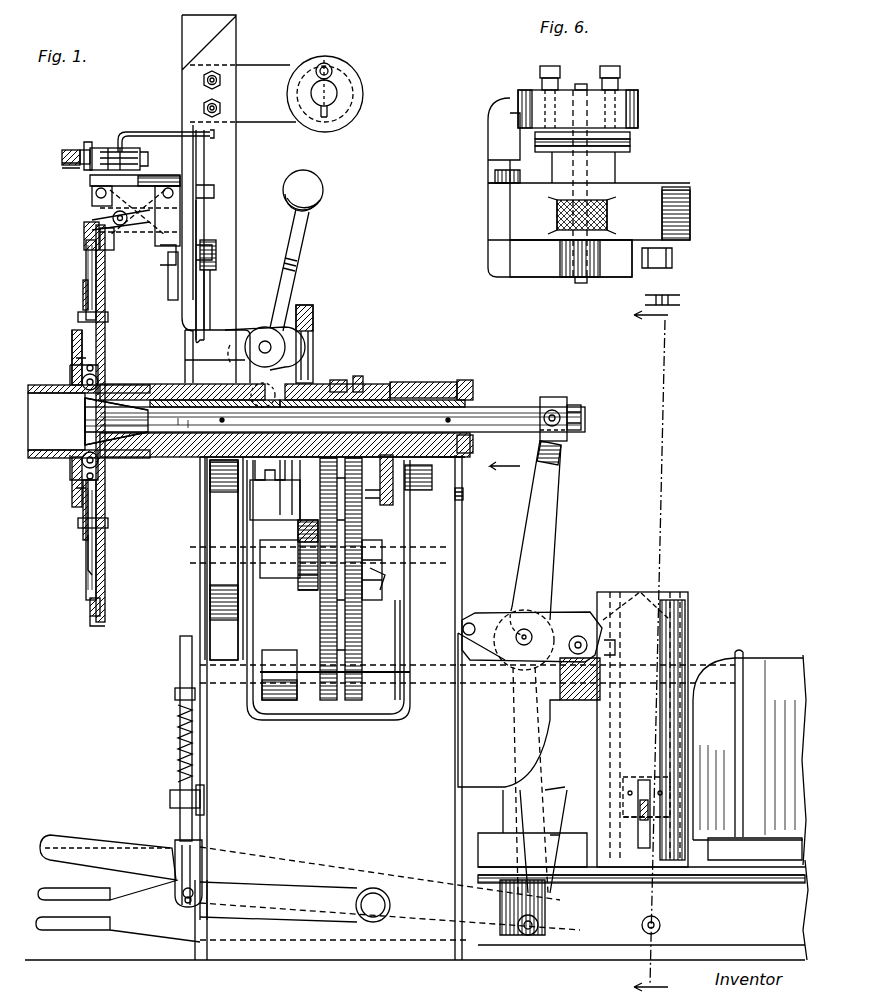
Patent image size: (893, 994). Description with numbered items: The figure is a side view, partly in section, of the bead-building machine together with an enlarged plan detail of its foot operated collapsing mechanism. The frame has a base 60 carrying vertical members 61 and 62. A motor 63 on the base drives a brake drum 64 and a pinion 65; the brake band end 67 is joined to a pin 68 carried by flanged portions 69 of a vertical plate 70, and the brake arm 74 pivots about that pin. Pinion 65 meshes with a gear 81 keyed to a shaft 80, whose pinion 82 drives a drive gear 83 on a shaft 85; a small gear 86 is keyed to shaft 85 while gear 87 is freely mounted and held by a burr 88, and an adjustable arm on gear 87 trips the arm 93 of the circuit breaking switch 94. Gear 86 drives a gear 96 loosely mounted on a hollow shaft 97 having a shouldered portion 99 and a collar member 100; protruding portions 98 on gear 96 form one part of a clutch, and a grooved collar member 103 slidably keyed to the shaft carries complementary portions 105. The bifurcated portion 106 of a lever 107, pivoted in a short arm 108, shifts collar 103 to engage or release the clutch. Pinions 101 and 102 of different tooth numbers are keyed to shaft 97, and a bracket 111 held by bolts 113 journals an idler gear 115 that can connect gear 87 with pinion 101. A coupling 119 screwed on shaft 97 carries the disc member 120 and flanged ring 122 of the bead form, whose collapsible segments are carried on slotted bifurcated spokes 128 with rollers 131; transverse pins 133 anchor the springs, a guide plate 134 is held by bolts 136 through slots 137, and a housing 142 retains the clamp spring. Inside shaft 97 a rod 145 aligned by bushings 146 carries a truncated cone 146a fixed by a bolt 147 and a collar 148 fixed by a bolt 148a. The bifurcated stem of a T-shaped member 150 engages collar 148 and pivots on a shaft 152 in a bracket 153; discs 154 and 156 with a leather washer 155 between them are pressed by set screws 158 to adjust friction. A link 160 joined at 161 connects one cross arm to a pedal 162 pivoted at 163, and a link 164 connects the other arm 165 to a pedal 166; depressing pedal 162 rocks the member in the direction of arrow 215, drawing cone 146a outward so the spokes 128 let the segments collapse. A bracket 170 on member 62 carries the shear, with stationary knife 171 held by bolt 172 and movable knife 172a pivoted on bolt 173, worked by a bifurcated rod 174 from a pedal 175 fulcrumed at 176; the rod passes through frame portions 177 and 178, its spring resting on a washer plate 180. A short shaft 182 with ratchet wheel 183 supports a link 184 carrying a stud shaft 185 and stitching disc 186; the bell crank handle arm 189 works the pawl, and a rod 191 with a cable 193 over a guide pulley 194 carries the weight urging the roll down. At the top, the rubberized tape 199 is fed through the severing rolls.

In FIG. 1, the base 60 is at (416, 910).
In FIG. 1, the vertically disposed frame member 61 is at (428, 382).
In FIG. 1, the vertically disposed frame member 62 is at (222, 170).
In FIG. 1, the motor 63 is at (756, 660).
In FIG. 1, the brake drum 64 is at (690, 710).
In FIG. 1, the pinion 65 is at (622, 778).
In FIG. 1, the end of brake band 67 is at (622, 793).
In FIG. 1, the pin 68 is at (622, 808).
In FIG. 1, the flanged portions 69 is at (636, 596).
In FIG. 1, the vertically disposed plate 70 is at (688, 637).
In FIG. 1, the brake arm 74 is at (645, 780).
In FIG. 1, the shaft 80 is at (378, 683).
In FIG. 1, the gear 81 is at (615, 647).
In FIG. 1, the pinion 82 is at (325, 662).
In FIG. 1, the drive gear 83 is at (330, 628).
In FIG. 1, the shaft 85 is at (283, 545).
In FIG. 1, the small gear 86 is at (308, 595).
In FIG. 1, the gear 87 is at (362, 615).
In FIG. 1, the burr 88 is at (379, 570).
In FIG. 1, the switch arm 93 is at (385, 568).
In FIG. 1, the circuit breaking switch 94 is at (390, 625).
In FIG. 1, the gear 96 is at (313, 318).
In FIG. 1, the hollow shaft 97 is at (383, 398).
In FIG. 1, the protruding portions 98 is at (288, 490).
In FIG. 1, the shouldered portion 99 is at (178, 393).
In FIG. 1, the collar member 100 is at (466, 400).
In FIG. 1, the small pinion 101 is at (340, 380).
In FIG. 1, the small pinion 102 is at (360, 374).
In FIG. 1, the grooved collar member 103 is at (268, 472).
In FIG. 1, the protruding portions 105 is at (275, 500).
In FIG. 1, the bifurcated portion 106 is at (223, 558).
In FIG. 1, the lever 107 is at (295, 235).
In FIG. 1, the short arm 108 is at (262, 338).
In FIG. 1, the bracket 111 is at (427, 477).
In FIG. 1, the bolts 113 is at (463, 490).
In FIG. 1, the idler gear wheel 115 is at (395, 508).
In FIG. 1, the coupling 119 is at (105, 345).
In FIG. 1, the disc member 120 is at (105, 297).
In FIG. 1, the ring 122 is at (90, 618).
In FIG. 1, the slotted bifurcated spokes 128 is at (90, 270).
In FIG. 1, the roller 131 is at (80, 380).
In FIG. 1, the transverse pins 133 is at (75, 360).
In FIG. 1, the guide plate 134 is at (85, 295).
In FIG. 1, the bolts 136 is at (78, 316).
In FIG. 1, the slots 137 is at (88, 550).
In FIG. 1, the housing 142 is at (114, 250).
In FIG. 1, the rod 145 is at (522, 420).
In FIG. 1, the bushings 146 is at (492, 433).
In FIG. 1, the truncated cone 146a is at (128, 402).
In FIG. 1, the bolt 147 is at (80, 425).
In FIG. 1, the collar 148 is at (552, 402).
In FIG. 1, the bolt 148a is at (582, 418).
In FIG. 1, the T-shaped member 150 is at (558, 462).
In FIG. 6, the T-shaped member 150 is at (610, 200).
In FIG. 1, the shaft 152 is at (524, 648).
In FIG. 6, the shaft 152 is at (580, 84).
In FIG. 1, the bracket 153 is at (540, 630).
In FIG. 6, the bracket 153 is at (522, 100).
In FIG. 6, the disc 154 is at (632, 150).
In FIG. 6, the leather washer 155 is at (632, 142).
In FIG. 6, the disc 156 is at (632, 132).
In FIG. 6, the set screws 158 is at (550, 66).
In FIG. 1, the link 160 is at (505, 815).
In FIG. 6, the link 160 is at (490, 187).
In FIG. 1, the pivot joint 161 is at (470, 623).
In FIG. 1, the pedal 162 is at (105, 848).
In FIG. 1, the pivot 163 is at (660, 925).
In FIG. 1, the link 164 is at (552, 835).
In FIG. 6, the link 164 is at (680, 248).
In FIG. 1, the arm 165 is at (578, 636).
In FIG. 1, the pedal 166 is at (78, 930).
In FIG. 1, the bracket 170 is at (145, 178).
In FIG. 1, the stationary knife portion 171 is at (95, 192).
In FIG. 1, the bolt 172 is at (100, 203).
In FIG. 1, the movable knife portion 172a is at (95, 178).
In FIG. 1, the bolt 173 is at (90, 225).
In FIG. 1, the bifurcated rod 174 is at (168, 275).
In FIG. 1, the pedal 175 is at (75, 895).
In FIG. 1, the fulcrum 176 is at (375, 920).
In FIG. 1, the protruding portion 177 is at (178, 695).
In FIG. 1, the protruding portion 178 is at (178, 808).
In FIG. 1, the washer plate 180 is at (204, 795).
In FIG. 1, the short shaft 182 is at (128, 156).
In FIG. 1, the ratchet wheel 183 is at (62, 157).
In FIG. 1, the link 184 is at (102, 148).
In FIG. 1, the stud shaft 185 is at (84, 150).
In FIG. 1, the stitching disc 186 is at (87, 142).
In FIG. 1, the bell crank arm 189 is at (70, 166).
In FIG. 1, the rod 191 is at (118, 150).
In FIG. 1, the cable 193 is at (213, 203).
In FIG. 1, the guide pulley 194 is at (216, 258).
In FIG. 1, the rubberized tape 199 is at (331, 56).
In FIG. 1, the arrow 215 is at (508, 459).